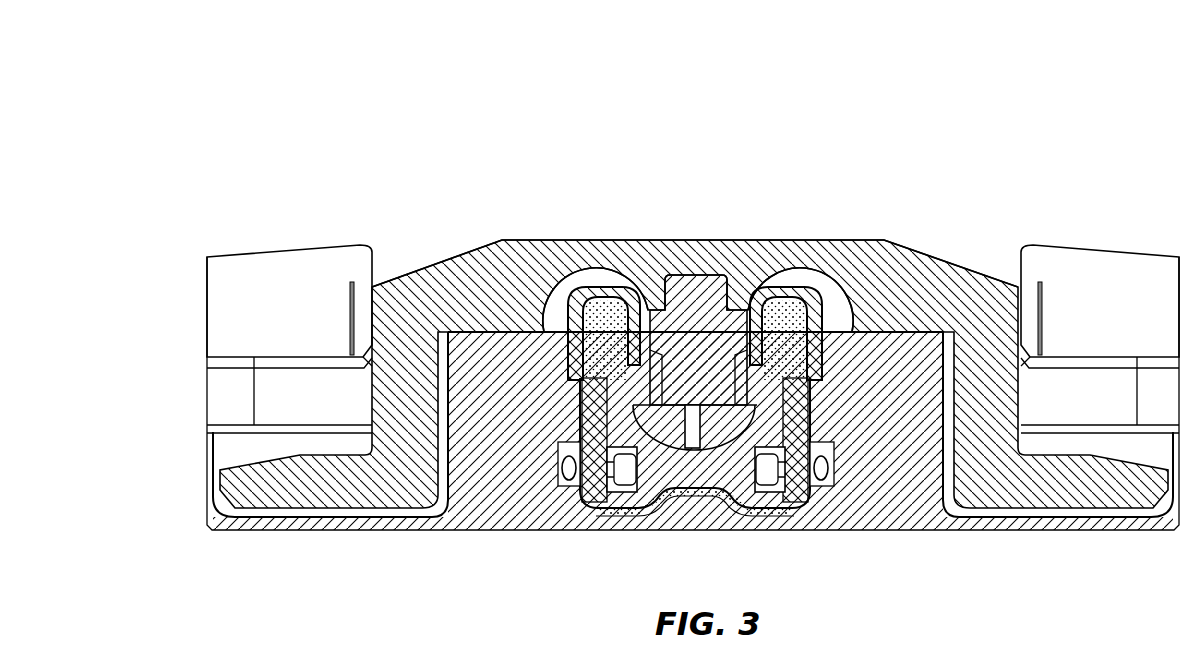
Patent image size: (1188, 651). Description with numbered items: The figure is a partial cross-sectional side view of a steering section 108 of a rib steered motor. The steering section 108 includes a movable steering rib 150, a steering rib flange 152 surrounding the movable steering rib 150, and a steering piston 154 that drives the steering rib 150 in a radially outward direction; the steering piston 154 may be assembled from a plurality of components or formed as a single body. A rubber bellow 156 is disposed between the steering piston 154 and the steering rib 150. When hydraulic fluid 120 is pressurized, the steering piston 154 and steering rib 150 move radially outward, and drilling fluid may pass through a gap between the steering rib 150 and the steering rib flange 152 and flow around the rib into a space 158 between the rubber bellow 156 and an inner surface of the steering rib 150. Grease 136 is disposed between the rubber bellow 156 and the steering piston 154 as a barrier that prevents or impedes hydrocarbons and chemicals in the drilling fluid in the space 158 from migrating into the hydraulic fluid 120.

The steering section 108 is at (387, 112).
The steering rib flange 152 is at (280, 290).
The space 158 is at (558, 300).
The rubber bellow 156 is at (592, 287).
The grease 136 is at (620, 310).
The steering piston 154 is at (697, 308).
The movable steering rib 150 is at (920, 285).
The hydraulic fluid 120 is at (775, 505).